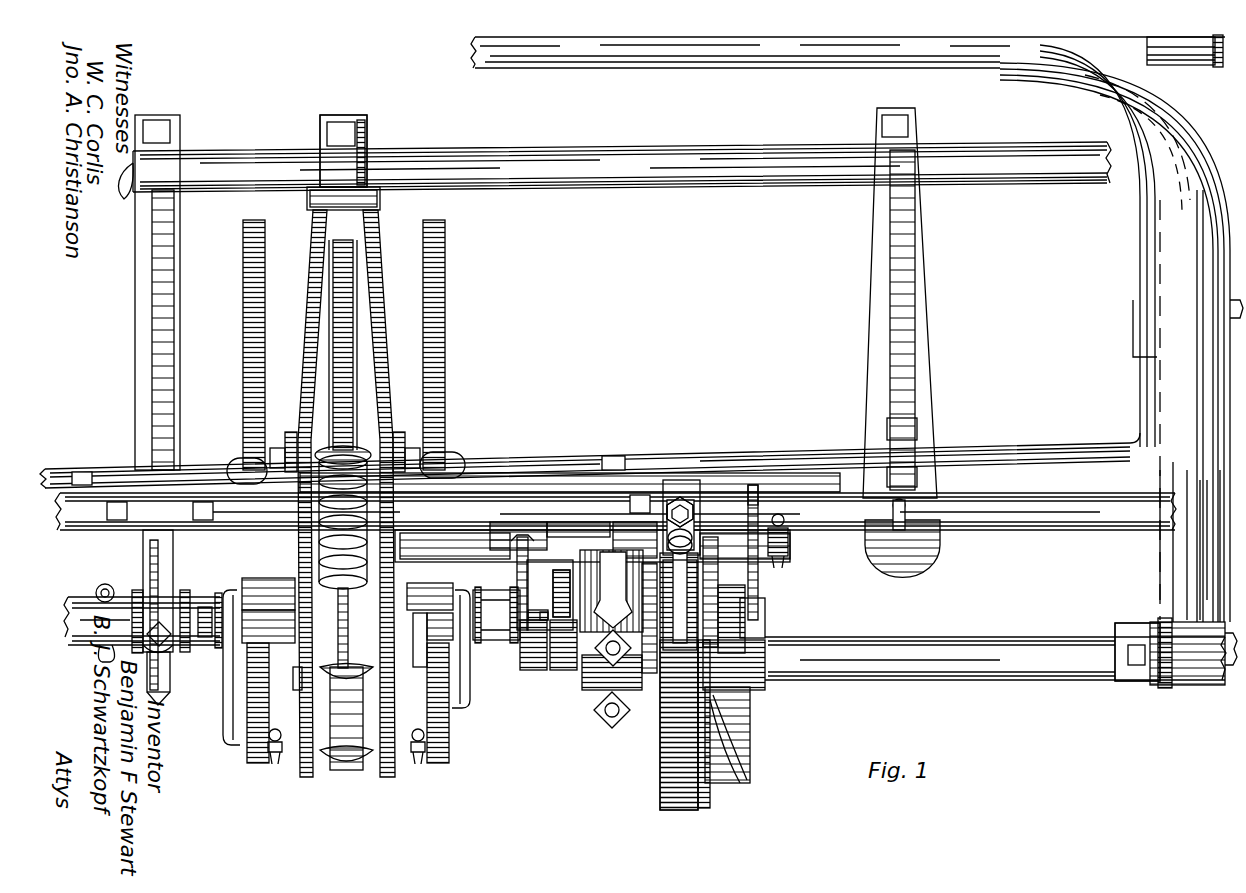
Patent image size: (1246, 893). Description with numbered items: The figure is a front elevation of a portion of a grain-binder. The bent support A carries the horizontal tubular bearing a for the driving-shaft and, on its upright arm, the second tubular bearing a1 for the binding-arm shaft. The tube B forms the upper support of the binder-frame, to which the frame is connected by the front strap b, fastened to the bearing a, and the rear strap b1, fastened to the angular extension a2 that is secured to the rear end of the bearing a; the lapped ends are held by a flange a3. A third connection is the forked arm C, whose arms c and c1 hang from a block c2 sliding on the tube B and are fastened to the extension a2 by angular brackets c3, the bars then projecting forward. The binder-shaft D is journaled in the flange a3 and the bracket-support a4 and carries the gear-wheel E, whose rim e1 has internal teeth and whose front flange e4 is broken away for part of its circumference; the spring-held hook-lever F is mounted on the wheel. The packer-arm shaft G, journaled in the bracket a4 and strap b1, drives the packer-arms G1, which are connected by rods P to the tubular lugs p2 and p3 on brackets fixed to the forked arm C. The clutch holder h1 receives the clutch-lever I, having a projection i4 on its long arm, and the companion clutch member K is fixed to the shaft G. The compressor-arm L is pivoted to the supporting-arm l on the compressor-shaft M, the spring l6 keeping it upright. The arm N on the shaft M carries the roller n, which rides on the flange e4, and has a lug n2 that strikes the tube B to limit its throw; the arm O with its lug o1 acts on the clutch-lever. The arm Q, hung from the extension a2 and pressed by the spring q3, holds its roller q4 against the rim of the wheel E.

The bent support A is at (1125, 270).
The horizontal tubular bearing a is at (1005, 438).
The second tubular bearing a1 is at (760, 68).
The angular extension a2 is at (105, 468).
The flange a3 is at (1162, 575).
The bracket-support a4 is at (596, 725).
The tube B is at (698, 190).
The front connecting strap b is at (922, 290).
The rear connecting strap b1 is at (135, 283).
The forked arm C is at (339, 442).
The fork arm c is at (368, 248).
The fork arm c1 is at (314, 245).
The block c2 is at (362, 158).
The angular brackets c3 is at (291, 432).
The binder-shaft D is at (915, 672).
The gear-wheel E is at (660, 786).
The rim e1 is at (700, 790).
The flange e4 is at (745, 714).
The hook-lever F is at (760, 660).
The packer-arm shaft G is at (80, 608).
The packer-arms G1 is at (252, 322).
The clutch receiver and holder h1 is at (567, 617).
The clutch-lever I is at (560, 620).
The projection i4 is at (545, 617).
The clutch member K is at (544, 602).
The compressor-arm L is at (355, 322).
The supporting-arm l is at (346, 717).
The spring l6 is at (348, 470).
The compressor-shaft M is at (592, 528).
The arm N is at (760, 617).
The roller n is at (740, 602).
The lug n2 is at (753, 485).
The arm O is at (520, 590).
The lug o1 is at (527, 630).
The connecting-rods P is at (222, 718).
The tubular lug p2 is at (432, 595).
The tubular lug p3 is at (262, 585).
The arm Q is at (690, 560).
The spring q3 is at (680, 497).
The roller q4 is at (682, 655).